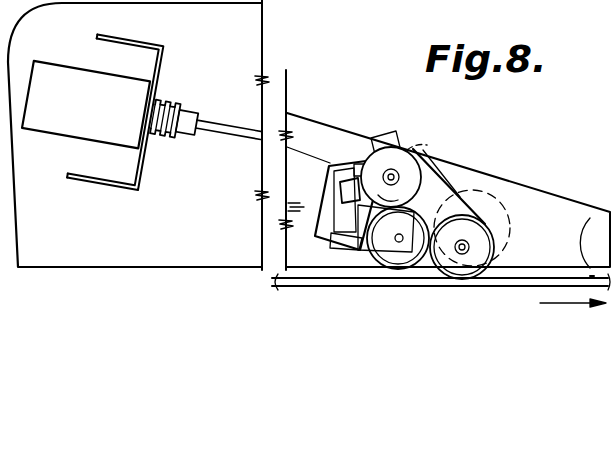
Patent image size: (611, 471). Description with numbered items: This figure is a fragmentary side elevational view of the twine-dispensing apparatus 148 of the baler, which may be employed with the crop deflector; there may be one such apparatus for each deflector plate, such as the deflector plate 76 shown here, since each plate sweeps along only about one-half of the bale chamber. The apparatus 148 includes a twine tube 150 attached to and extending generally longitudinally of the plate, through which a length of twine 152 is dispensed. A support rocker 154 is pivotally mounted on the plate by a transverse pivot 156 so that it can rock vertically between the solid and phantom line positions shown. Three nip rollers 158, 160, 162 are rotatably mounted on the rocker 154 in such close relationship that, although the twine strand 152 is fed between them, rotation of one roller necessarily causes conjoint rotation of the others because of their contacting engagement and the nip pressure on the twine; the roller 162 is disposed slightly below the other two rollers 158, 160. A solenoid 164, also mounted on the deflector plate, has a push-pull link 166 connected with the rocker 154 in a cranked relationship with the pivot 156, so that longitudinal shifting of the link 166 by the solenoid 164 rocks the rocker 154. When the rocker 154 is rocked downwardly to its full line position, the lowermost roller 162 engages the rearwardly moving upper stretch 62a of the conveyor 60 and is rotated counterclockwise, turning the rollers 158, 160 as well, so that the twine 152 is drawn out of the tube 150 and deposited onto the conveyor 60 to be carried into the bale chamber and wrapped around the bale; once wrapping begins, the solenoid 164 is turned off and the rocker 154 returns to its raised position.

The conveyor 60 is at (258, 296).
The upper stretch 62a is at (312, 283).
The deflector plate 76 is at (256, 30).
The twine-dispensing apparatus 148 is at (505, 156).
The twine tube 150 is at (296, 158).
The twine 152 is at (488, 198).
The support rocker 154 is at (457, 172).
The transverse pivot 156 is at (391, 168).
The nip roller 158 is at (420, 150).
The nip roller 160 is at (398, 270).
The nip roller 162 is at (487, 280).
The solenoid 164 is at (50, 73).
The push-pull link 166 is at (283, 203).